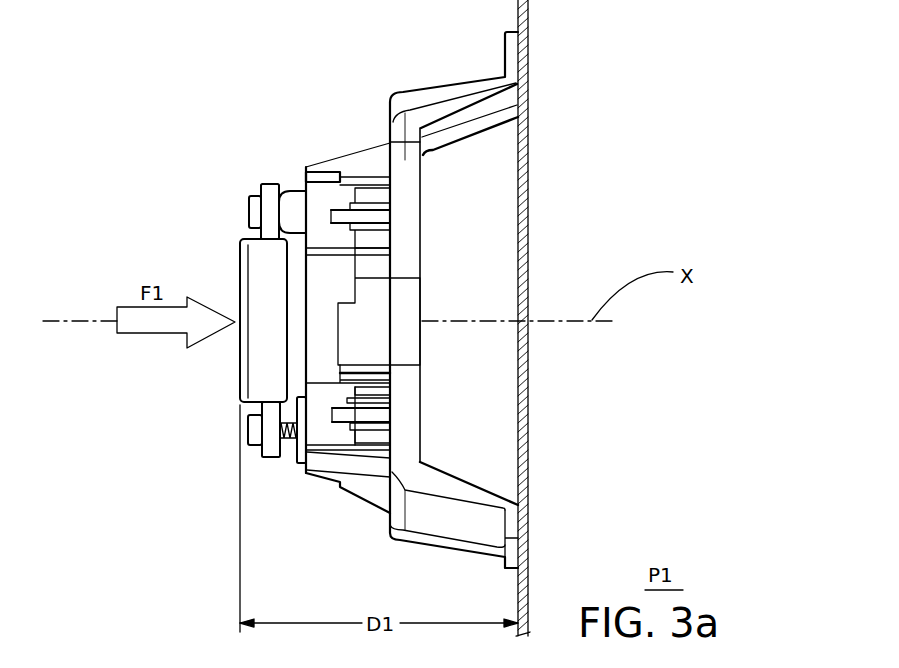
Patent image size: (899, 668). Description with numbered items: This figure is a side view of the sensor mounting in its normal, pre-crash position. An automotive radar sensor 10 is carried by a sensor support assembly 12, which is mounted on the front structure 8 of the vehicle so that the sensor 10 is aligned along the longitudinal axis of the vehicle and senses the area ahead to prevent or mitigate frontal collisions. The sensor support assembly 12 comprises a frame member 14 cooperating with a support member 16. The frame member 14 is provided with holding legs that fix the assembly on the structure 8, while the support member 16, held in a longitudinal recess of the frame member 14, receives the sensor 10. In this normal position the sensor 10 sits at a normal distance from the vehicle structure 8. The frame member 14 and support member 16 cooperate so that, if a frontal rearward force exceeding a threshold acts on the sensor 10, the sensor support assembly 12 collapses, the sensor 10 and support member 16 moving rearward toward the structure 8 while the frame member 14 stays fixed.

The front structure 8 is at (528, 160).
The automotive radar sensor 10 is at (253, 267).
The sensor support assembly 12 is at (220, 5).
The frame member 14 is at (405, 88).
The support member 16 is at (325, 165).